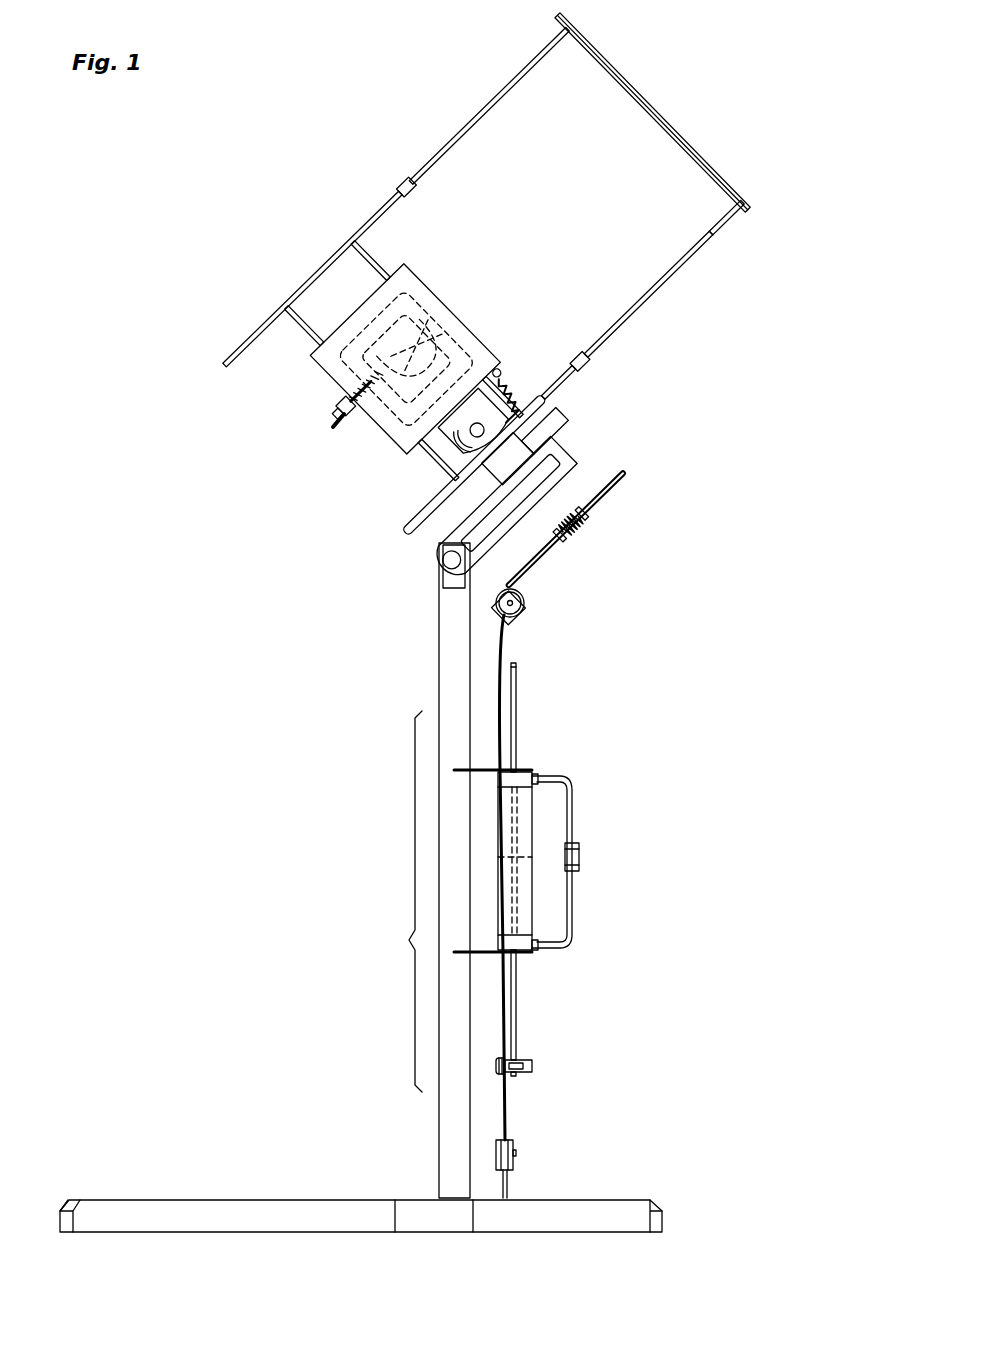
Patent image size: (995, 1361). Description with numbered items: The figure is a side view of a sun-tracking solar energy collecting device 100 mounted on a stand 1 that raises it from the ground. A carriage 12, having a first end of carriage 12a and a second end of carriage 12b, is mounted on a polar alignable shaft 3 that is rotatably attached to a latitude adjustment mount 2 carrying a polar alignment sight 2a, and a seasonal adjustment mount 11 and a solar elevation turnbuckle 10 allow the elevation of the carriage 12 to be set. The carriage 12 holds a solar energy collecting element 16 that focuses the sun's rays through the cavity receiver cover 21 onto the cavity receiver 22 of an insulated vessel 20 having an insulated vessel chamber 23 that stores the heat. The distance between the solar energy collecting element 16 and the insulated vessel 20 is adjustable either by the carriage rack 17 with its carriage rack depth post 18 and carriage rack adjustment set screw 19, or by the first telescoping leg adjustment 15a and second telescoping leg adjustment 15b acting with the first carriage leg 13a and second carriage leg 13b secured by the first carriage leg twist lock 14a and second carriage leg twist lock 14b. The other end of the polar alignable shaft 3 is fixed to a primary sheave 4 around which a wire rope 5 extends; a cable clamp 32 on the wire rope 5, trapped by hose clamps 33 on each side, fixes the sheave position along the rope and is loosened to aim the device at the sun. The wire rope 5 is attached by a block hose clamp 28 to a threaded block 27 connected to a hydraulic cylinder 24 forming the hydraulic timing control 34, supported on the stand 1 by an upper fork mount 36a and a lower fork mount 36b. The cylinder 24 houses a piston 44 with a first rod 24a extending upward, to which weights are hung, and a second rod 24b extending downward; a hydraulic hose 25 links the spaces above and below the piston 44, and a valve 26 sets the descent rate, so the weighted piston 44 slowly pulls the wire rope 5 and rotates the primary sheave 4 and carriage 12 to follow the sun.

The device 100 is at (341, 74).
The stand 1 is at (437, 641).
The latitude adjustment mount 2 is at (440, 540).
The polar alignment sight 2a is at (502, 503).
The polar alignable shaft 3 is at (521, 446).
The primary sheave 4 is at (612, 490).
The wire rope 5 is at (507, 652).
The solar elevation turnbuckle 10 is at (506, 410).
The seasonal adjustment mount 11 is at (453, 428).
The carriage 12 is at (313, 358).
The first end of carriage 12a is at (724, 224).
The second end of carriage 12b is at (400, 541).
The first carriage leg 13a is at (562, 380).
The second carriage leg 13b is at (323, 262).
The first carriage leg twist lock 14a is at (586, 366).
The second carriage leg twist lock 14b is at (402, 182).
The first telescoping leg adjustment 15a is at (680, 270).
The second telescoping leg adjustment 15b is at (505, 87).
The solar energy collecting element 16 is at (618, 68).
The carriage rack 17 is at (352, 398).
The carriage rack depth post 18 is at (333, 428).
The carriage rack adjustment set screw 19 is at (340, 406).
The insulated vessel 20 is at (407, 285).
The cavity receiver cover 21 is at (438, 322).
The cavity receiver 22 is at (455, 332).
The insulated vessel chamber 23 is at (470, 355).
The cylinder 24 is at (527, 922).
The first rod 24a is at (518, 720).
The second rod 24b is at (518, 1005).
The hydraulic hose 25 is at (575, 822).
The valve 26 is at (579, 866).
The threaded block 27 is at (520, 1059).
The block hose clamp 28 is at (534, 1068).
The cable clamp 32 is at (576, 534).
The hose clamps 33 is at (573, 514).
The hydraulic timing control 34 is at (400, 901).
The upper fork mount 36a is at (480, 770).
The lower fork mount 36b is at (483, 958).
The piston 44 is at (522, 854).